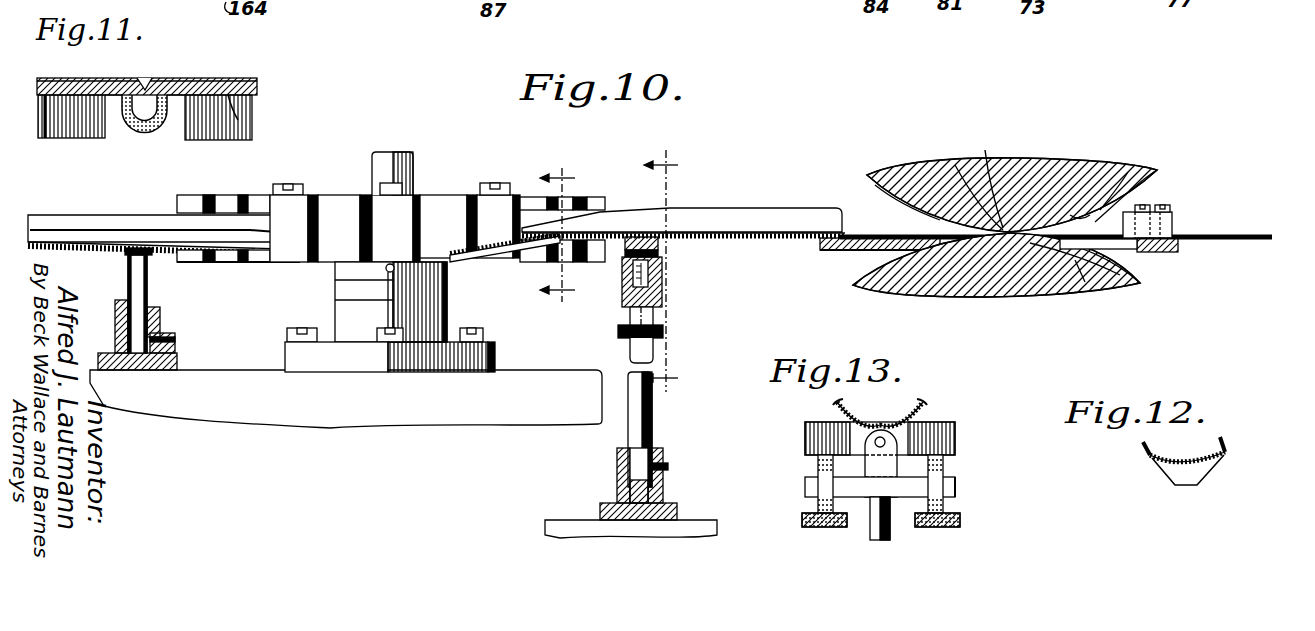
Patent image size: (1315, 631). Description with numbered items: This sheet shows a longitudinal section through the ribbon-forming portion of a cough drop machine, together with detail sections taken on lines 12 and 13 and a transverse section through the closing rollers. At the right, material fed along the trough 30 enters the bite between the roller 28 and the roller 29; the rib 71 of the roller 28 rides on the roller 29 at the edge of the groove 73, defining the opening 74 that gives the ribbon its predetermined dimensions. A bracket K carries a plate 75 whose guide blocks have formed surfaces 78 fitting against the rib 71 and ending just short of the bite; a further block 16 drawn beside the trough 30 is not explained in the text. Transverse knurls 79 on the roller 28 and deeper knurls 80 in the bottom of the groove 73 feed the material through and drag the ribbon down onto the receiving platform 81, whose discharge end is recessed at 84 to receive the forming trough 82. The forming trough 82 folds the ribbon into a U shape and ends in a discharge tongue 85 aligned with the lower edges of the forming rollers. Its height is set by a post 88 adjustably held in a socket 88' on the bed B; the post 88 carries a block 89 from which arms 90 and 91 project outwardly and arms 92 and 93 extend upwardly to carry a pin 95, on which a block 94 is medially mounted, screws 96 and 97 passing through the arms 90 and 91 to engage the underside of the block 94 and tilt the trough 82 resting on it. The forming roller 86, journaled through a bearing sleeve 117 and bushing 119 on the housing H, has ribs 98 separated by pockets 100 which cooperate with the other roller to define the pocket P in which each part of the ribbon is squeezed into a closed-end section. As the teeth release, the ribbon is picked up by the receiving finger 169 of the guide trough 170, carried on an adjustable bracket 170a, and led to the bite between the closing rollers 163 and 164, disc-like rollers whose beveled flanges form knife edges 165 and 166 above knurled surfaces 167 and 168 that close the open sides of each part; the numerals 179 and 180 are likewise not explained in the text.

In FIG. 11, the closing roller 163 is at (240, 78).
In FIG. 11, the closing roller 164 is at (112, 66).
In FIG. 11, the knife edge 165 is at (210, 78).
In FIG. 11, the knife edge 166 is at (63, 78).
In FIG. 11, the knurled surface 167 is at (238, 100).
In FIG. 11, the knurled surface 168 is at (110, 134).
In FIG. 10, the receiving finger 169 is at (293, 263).
In FIG. 11, the guide trough 170 is at (157, 129).
In FIG. 10, the guide trough 170 is at (62, 246).
In FIG. 10, the adjustable bracket 170a is at (148, 283).
In FIG. 11, the gap 179 is at (185, 78).
In FIG. 11, the notch 180 is at (144, 78).
In FIG. 10, the housing H is at (240, 370).
In FIG. 10, the ribs or teeth 98 is at (232, 196).
In FIG. 10, the pocket 100 is at (333, 203).
In FIG. 10, the pocket P is at (400, 205).
In FIG. 10, the forming roller 86 is at (450, 194).
In FIG. 10, the bearing sleeve 117 is at (337, 320).
In FIG. 10, the bushing 119 is at (440, 300).
In FIG. 10, the discharge tongue 85 is at (498, 258).
In FIG. 10, the block 94 is at (660, 230).
In FIG. 13, the block 94 is at (805, 437).
In FIG. 10, the forming trough 82 is at (755, 239).
In FIG. 13, the forming trough 82 is at (920, 410).
In FIG. 12, the forming trough 82 is at (1226, 447).
In FIG. 10, the trough 30 is at (1236, 237).
In FIG. 10, the section line 12— 12 is at (568, 234).
In FIG. 10, the section line 13— 13 is at (673, 271).
In FIG. 10, the pin 95 is at (662, 250).
In FIG. 13, the pin 95 is at (874, 440).
In FIG. 10, the arm 92 is at (660, 272).
In FIG. 13, the arm 92 is at (897, 445).
In FIG. 10, the arm 93 is at (628, 283).
In FIG. 10, the post 88 is at (663, 429).
In FIG. 13, the post 88 is at (934, 520).
In FIG. 10, the socket 88' is at (655, 484).
In FIG. 10, the bed B is at (562, 520).
In FIG. 10, the receiving platform 81 is at (848, 250).
In FIG. 10, the recess 84 is at (833, 250).
In FIG. 10, the roller 28 is at (1080, 162).
In FIG. 10, the roller 29 is at (1035, 298).
In FIG. 10, the opening 74 is at (985, 150).
In FIG. 10, the knurls 79 is at (1120, 176).
In FIG. 10, the rib 71 is at (885, 190).
In FIG. 10, the formed surface 78 is at (1078, 215).
In FIG. 10, the knurls 80 is at (1085, 282).
In FIG. 10, the groove 73 is at (1112, 290).
In FIG. 10, the block 16 is at (1146, 207).
In FIG. 10, the plate 75 is at (1178, 252).
In FIG. 10, the bracket K is at (1128, 252).
In FIG. 13, the arm 90 is at (950, 478).
In FIG. 13, the block 89 is at (958, 487).
In FIG. 13, the arm 91 is at (805, 485).
In FIG. 13, the screw 96 is at (960, 502).
In FIG. 13, the screw 97 is at (812, 505).